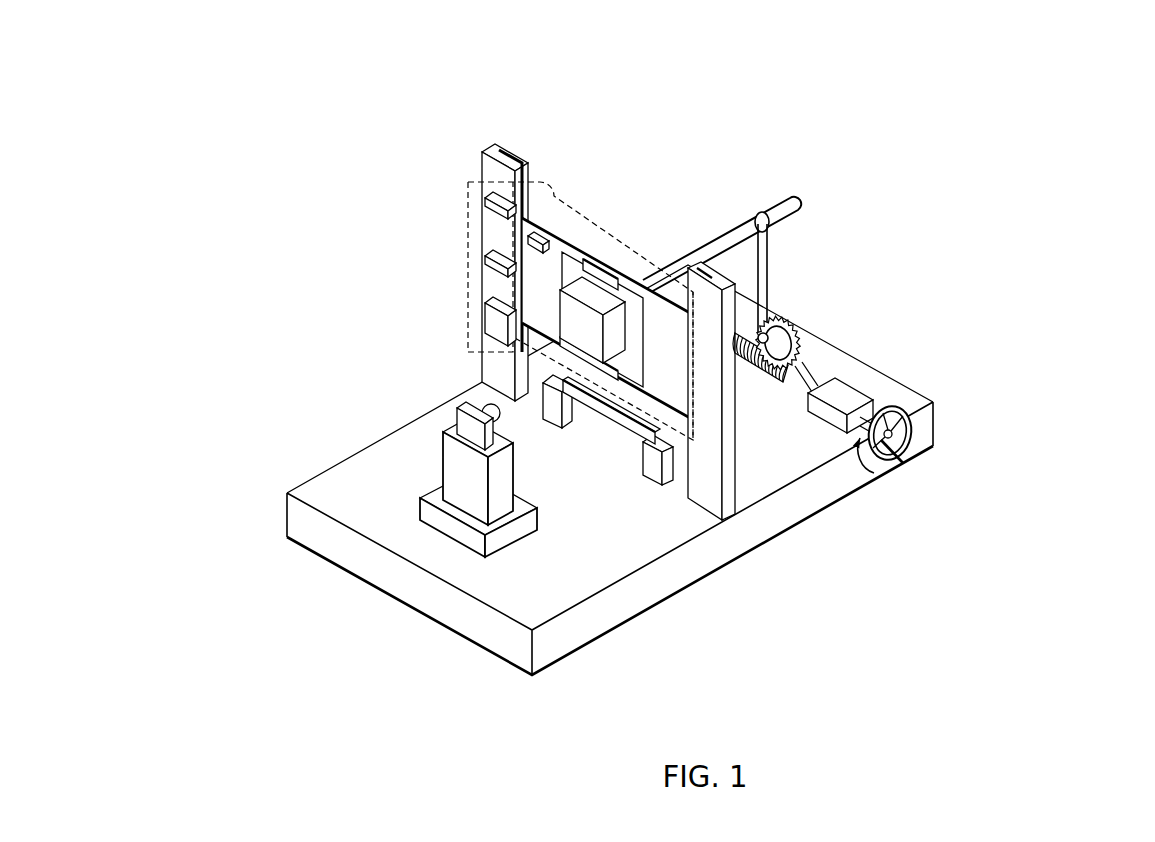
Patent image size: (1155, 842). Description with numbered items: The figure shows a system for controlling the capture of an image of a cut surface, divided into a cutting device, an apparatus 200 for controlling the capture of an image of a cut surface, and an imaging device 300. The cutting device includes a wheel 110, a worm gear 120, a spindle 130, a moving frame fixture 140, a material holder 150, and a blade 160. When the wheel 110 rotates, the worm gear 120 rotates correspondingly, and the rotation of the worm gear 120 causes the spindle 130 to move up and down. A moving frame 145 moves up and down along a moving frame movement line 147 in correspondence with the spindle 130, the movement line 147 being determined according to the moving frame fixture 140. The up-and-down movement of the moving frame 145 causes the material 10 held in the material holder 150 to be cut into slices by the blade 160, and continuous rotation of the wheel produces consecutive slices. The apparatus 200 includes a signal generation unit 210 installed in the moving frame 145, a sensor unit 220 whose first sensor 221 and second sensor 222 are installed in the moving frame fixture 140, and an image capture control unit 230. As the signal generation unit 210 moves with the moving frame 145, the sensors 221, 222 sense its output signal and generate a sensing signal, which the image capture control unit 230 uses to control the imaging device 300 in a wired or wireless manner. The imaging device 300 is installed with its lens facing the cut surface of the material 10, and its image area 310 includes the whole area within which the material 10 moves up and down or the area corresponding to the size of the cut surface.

The material 10 is at (597, 340).
The wheel 110 is at (908, 443).
The worm gear 120 is at (802, 343).
The spindle 130 is at (788, 220).
The moving frame fixture 140 is at (485, 147).
The moving frame 145 is at (668, 297).
The moving frame movement line 147 is at (515, 162).
The material holder 150 is at (645, 347).
The blade 160 is at (605, 420).
The apparatus for controlling the capture of an image of a cut surface 200 is at (472, 182).
The signal generation unit 210 is at (548, 232).
The sensor unit 220 is at (337, 243).
The first sensor 221 is at (481, 261).
The second sensor 222 is at (481, 201).
The image capture control unit 230 is at (492, 337).
The imaging device 300 is at (470, 440).
The image area 310 is at (697, 367).